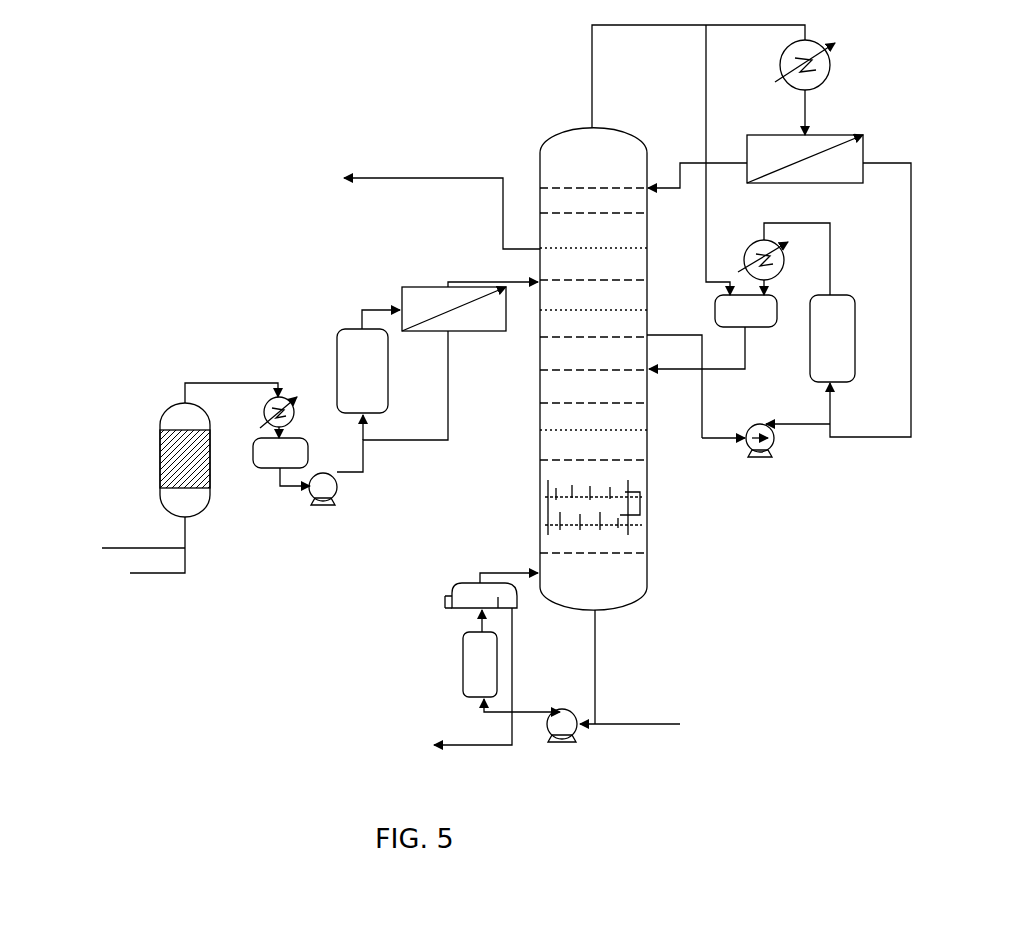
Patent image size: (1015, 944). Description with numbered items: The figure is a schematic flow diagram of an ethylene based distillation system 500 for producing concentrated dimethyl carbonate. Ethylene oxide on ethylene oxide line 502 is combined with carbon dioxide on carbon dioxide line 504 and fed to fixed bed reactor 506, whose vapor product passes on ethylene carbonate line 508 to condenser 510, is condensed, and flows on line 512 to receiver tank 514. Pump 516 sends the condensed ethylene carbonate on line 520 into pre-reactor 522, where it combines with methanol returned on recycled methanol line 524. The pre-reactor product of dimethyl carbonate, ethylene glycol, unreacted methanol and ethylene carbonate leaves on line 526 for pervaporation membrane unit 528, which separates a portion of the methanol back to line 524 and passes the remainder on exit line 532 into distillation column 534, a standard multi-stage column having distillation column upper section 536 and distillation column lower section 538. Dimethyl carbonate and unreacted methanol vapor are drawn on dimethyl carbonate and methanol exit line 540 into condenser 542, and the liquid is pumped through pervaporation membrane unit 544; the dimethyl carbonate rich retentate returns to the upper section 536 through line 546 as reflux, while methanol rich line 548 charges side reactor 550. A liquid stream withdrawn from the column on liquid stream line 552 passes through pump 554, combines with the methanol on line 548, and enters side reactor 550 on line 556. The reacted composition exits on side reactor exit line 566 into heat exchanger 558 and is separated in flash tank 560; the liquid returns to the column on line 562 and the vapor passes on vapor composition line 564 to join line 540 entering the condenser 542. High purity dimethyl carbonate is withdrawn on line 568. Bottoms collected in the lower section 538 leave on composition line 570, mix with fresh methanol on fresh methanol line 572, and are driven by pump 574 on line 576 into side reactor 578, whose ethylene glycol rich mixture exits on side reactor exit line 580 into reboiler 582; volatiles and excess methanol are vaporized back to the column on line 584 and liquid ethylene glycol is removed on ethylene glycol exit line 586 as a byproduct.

The ethylene based distillation system 500 is at (990, 522).
The ethylene oxide line 502 is at (187, 565).
The carbon dioxide line 504 is at (146, 545).
The fixed bed reactor 506 is at (160, 405).
The ethylene carbonate line 508 is at (230, 383).
The condenser 510 is at (292, 405).
The line 512 is at (268, 422).
The receiver tank 514 is at (272, 470).
The pump 516 is at (338, 495).
The line 520 is at (364, 460).
The pre-reactor 522 is at (337, 345).
The recycled methanol line 524 is at (449, 418).
The line 526 is at (362, 308).
The pervaporation membrane unit 528 is at (420, 285).
The exit line 532 is at (520, 300).
The distillation column 534 is at (692, 255).
The distillation column upper section 536 is at (593, 357).
The distillation column lower section 538 is at (593, 545).
The dimethyl carbonate and methanol exit line 540 is at (590, 78).
The condenser 542 is at (832, 55).
The pervaporation membrane unit 544 is at (865, 135).
The line 546 is at (715, 160).
The methanol rich line 548 is at (915, 200).
The side reactor 550 is at (838, 295).
The liquid stream line 552 is at (718, 440).
The pump 554 is at (775, 445).
The line 556 is at (828, 398).
The heat exchanger 558 is at (758, 243).
The flash tank 560 is at (770, 327).
The line 562 is at (720, 370).
The vapor composition line 564 is at (704, 55).
The side reactor exit line 566 is at (815, 222).
The line 568 is at (410, 176).
The composition line 570 is at (598, 640).
The fresh methanol line 572 is at (618, 728).
The pump 574 is at (572, 740).
The line 576 is at (532, 720).
The side reactor 578 is at (463, 668).
The side reactor exit line 580 is at (478, 618).
The reboiler 582 is at (462, 590).
The line 584 is at (510, 572).
The ethylene glycol exit line 586 is at (514, 660).